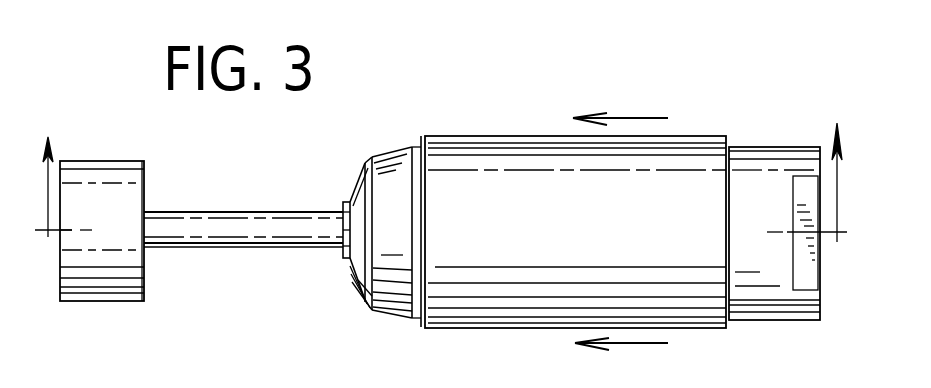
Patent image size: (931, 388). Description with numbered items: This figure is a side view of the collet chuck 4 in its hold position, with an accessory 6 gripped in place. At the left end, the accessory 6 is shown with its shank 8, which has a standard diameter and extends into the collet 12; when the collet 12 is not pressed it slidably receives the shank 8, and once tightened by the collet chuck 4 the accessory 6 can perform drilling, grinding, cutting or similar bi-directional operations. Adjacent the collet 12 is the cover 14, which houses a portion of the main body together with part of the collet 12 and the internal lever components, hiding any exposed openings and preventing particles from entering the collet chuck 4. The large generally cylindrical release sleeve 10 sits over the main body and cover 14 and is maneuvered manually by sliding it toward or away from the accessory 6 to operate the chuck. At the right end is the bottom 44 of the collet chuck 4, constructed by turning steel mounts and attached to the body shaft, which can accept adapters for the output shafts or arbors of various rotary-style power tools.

The collet chuck 4 is at (441, 170).
The accessory 6 is at (107, 161).
The shank 8 is at (228, 247).
The release sleeve 10 is at (477, 136).
The collet 12 is at (343, 203).
The cover 14 is at (383, 153).
The bottom 44 is at (777, 146).